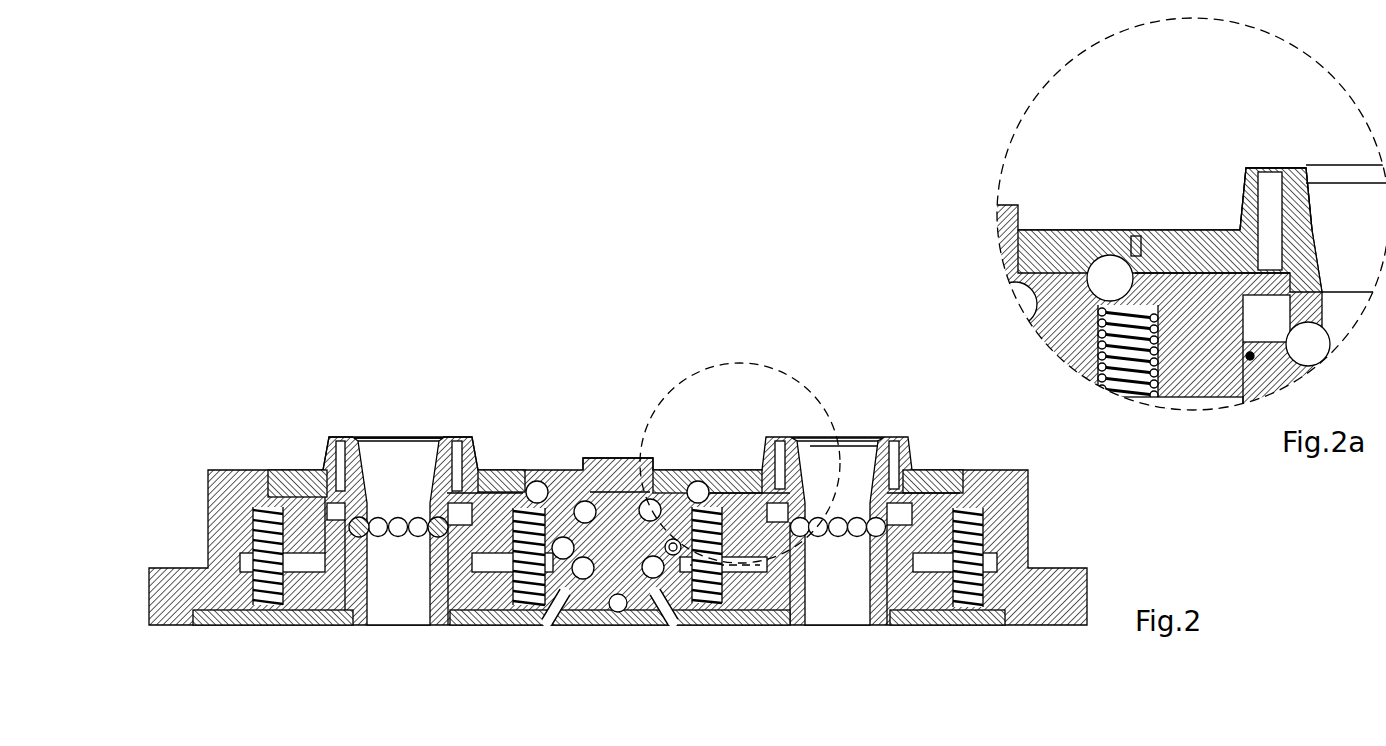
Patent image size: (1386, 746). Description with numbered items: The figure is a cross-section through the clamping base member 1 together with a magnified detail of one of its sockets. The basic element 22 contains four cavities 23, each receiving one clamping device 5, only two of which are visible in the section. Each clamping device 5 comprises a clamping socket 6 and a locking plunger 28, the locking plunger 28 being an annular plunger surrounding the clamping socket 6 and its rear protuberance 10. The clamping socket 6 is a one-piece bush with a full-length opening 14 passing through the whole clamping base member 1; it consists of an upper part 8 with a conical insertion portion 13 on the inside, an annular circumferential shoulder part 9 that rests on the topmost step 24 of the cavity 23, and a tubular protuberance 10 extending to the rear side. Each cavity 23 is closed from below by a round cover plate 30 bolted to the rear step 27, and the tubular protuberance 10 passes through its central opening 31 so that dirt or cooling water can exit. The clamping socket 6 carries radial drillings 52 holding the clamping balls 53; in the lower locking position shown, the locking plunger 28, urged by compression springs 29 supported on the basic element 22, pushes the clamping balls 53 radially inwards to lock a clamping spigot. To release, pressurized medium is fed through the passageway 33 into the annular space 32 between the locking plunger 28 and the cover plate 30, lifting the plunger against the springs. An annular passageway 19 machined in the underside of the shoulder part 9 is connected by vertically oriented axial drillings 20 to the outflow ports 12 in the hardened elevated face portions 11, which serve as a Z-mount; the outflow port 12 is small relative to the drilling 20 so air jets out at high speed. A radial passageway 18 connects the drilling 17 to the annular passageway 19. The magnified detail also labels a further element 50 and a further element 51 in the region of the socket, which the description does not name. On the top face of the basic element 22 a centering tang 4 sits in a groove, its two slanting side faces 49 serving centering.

In FIG. 2, the clamping base member 1 is at (883, 392).
In FIG. 2, the centering tang 4 is at (617, 456).
In FIG. 2, the clamping device 5 is at (378, 608).
In FIG. 2, the clamping socket 6 is at (398, 395).
In FIG. 2, the upper part 8 is at (349, 452).
In FIG. 2, the annular circumferential shoulder part 9 is at (280, 470).
In FIG. 2, the tubular protuberance 10 is at (367, 597).
In FIG. 2, the elevated face portion 11 is at (327, 440).
In FIG. 2A, the elevated face portion 11 is at (1248, 163).
In FIG. 2, the outflow port 12 is at (341, 440).
In FIG. 2A, the outflow port 12 is at (1270, 168).
In FIG. 2, the conical insertion portion 13 is at (432, 466).
In FIG. 2, the full-length opening 14 is at (401, 468).
In FIG. 2, the drilling 17 is at (538, 490).
In FIG. 2A, the drilling 17 is at (1107, 270).
In FIG. 2, the passageway 18 is at (498, 490).
In FIG. 2A, the passageway 18 is at (1155, 271).
In FIG. 2, the annular passageway 19 is at (482, 478).
In FIG. 2A, the annular passageway 19 is at (1240, 262).
In FIG. 2, the axial drilling 20 is at (457, 481).
In FIG. 2A, the axial drilling 20 is at (1268, 200).
In FIG. 2, the basic element 22 is at (237, 468).
In FIG. 2, the cavity 23 is at (486, 566).
In FIG. 2, the topmost step 24 is at (300, 486).
In FIG. 2, the rear step 27 is at (208, 628).
In FIG. 2, the locking plunger 28 is at (505, 628).
In FIG. 2, the compression spring 29 is at (265, 628).
In FIG. 2, the cover plate 30 is at (232, 628).
In FIG. 2, the central opening 31 is at (398, 630).
In FIG. 2, the annular space 32 is at (463, 628).
In FIG. 2, the passageway 33 is at (560, 628).
In FIG. 2, the slanting side face 49 is at (582, 458).
In FIG. 2A, the pin 50 is at (1134, 250).
In FIG. 2A, the shoulder 51 is at (1292, 270).
In FIG. 2, the radial drilling 52 is at (395, 538).
In FIG. 2, the clamping ball 53 is at (365, 536).